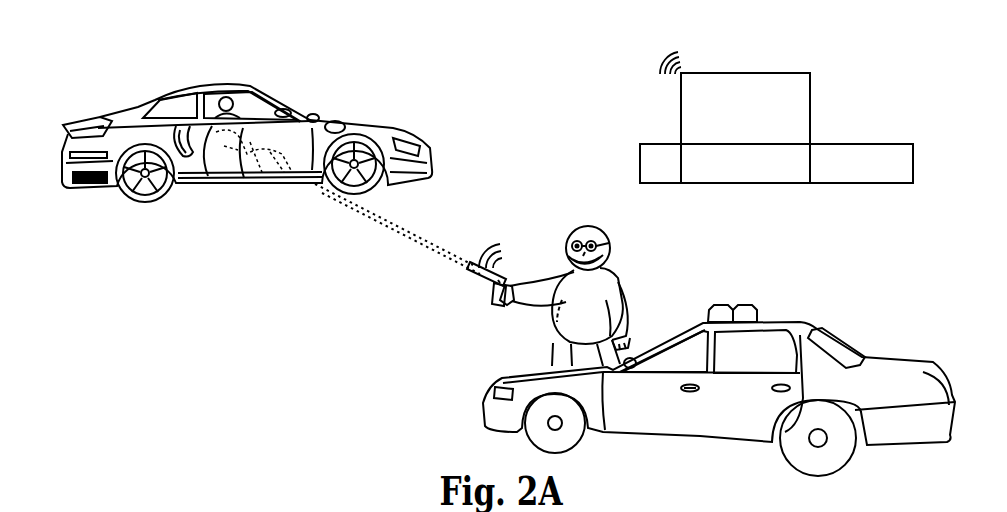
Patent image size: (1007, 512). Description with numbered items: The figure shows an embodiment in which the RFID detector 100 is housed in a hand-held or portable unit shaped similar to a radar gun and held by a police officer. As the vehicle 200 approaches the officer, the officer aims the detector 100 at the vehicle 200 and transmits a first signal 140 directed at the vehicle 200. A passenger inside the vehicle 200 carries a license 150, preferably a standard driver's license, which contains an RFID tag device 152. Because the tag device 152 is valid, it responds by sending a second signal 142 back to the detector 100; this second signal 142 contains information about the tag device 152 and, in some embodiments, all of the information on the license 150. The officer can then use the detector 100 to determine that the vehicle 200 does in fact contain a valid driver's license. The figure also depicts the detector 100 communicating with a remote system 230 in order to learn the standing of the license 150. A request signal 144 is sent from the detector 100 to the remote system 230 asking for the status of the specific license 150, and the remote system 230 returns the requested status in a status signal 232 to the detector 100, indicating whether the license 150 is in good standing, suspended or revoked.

The RFID detector 100 is at (480, 283).
The first signal 140 is at (420, 230).
The second signal 142 is at (413, 237).
The request signal 144 is at (486, 239).
The license 150 is at (196, 186).
The RFID tag device 152 is at (247, 178).
The vehicle 200 is at (247, 157).
The remote system 230 is at (817, 67).
The status signal 232 is at (665, 52).